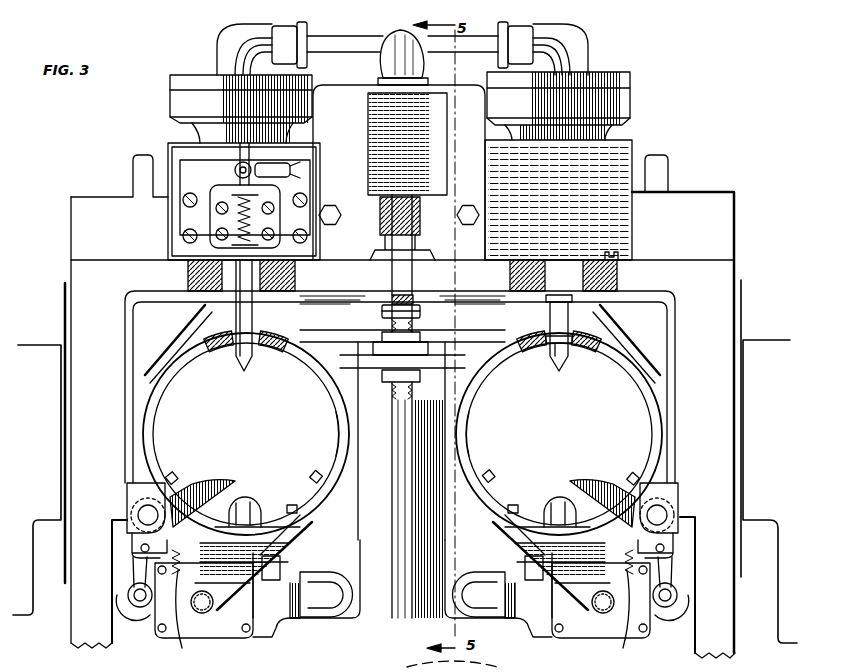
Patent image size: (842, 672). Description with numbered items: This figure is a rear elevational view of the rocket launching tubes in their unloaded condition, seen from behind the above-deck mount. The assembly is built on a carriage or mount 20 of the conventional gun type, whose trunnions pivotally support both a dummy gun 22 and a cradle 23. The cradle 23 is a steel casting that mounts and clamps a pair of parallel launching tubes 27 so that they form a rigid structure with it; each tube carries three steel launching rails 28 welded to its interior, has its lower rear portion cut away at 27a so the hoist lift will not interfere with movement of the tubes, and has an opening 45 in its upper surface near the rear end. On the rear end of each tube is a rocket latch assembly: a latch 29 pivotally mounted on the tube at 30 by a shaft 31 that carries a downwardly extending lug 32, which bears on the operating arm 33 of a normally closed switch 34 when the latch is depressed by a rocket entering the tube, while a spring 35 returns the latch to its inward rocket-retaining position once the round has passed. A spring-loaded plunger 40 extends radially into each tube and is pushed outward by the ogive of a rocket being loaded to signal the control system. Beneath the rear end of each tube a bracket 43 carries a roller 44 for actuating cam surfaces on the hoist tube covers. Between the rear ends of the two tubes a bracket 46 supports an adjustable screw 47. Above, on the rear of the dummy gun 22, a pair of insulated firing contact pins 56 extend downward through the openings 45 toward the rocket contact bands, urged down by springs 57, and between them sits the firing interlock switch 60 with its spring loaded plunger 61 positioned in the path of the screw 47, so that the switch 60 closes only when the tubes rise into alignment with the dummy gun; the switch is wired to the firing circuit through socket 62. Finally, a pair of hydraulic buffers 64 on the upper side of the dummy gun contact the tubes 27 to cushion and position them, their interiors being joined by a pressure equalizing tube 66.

The carriage or mount 20 is at (33, 358).
The dummy gun 22 is at (718, 270).
The cradle 23 is at (652, 318).
The launching tubes 27 is at (157, 387).
The cut-away portion 27a is at (342, 441).
The launching rails 28 is at (174, 478).
The latch 29 is at (210, 482).
The latch pivot mounting 30 is at (133, 487).
The shaft 31 is at (140, 515).
The lug 32 is at (160, 550).
The operating arm 33 is at (133, 573).
The switch 34 is at (157, 613).
The spring 35 is at (404, 607).
The spring-loaded plunger 40 is at (260, 512).
The bracket 43 is at (252, 585).
The roller 44 is at (206, 613).
The opening 45 is at (272, 345).
The bracket 46 is at (443, 360).
The adjustable screw 47 is at (422, 311).
The firing contact pins 56 is at (238, 355).
The springs 57 is at (240, 228).
The switch 60 is at (398, 128).
The spring loaded plunger 61 is at (395, 297).
The socket 62 is at (418, 53).
The buffers 64 is at (622, 106).
The pressure equalizing tube 66 is at (356, 47).